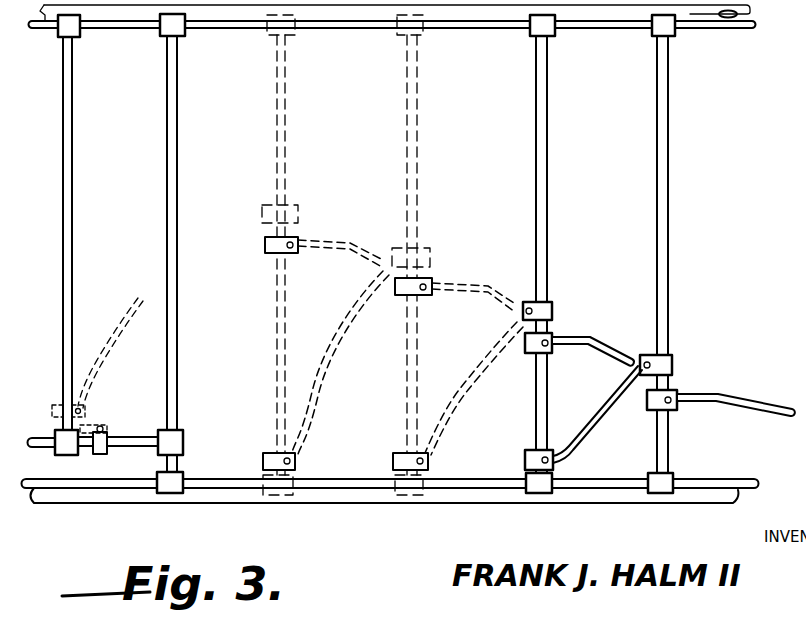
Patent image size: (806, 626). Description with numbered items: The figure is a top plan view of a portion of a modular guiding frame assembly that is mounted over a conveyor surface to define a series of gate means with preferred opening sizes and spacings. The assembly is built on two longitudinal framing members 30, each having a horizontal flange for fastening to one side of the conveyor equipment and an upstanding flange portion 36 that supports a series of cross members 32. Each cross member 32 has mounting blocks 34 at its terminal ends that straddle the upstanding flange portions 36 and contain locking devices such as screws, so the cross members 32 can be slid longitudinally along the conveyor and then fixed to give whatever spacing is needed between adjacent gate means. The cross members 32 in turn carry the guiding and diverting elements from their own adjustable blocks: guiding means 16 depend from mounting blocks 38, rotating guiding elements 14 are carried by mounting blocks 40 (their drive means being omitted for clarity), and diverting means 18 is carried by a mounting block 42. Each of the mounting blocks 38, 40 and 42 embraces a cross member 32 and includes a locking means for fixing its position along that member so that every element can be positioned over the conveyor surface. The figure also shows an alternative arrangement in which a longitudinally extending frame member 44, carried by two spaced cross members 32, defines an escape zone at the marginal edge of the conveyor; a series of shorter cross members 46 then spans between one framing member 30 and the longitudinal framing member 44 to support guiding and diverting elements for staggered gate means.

The rotating guiding element 14 is at (532, 302).
The guiding means 16 is at (565, 340).
The diverting means 18 is at (598, 419).
The longitudinal framing member 30 is at (700, 14).
The cross member 32 is at (177, 141).
The mounting block 34 is at (183, 37).
The upstanding flange portion 36 is at (575, 30).
The mounting block 38 is at (552, 352).
The mounting block 40 is at (553, 306).
The mounting block 42 is at (525, 460).
The longitudinal framing member 44 is at (145, 422).
The shorter cross member 46 is at (72, 162).